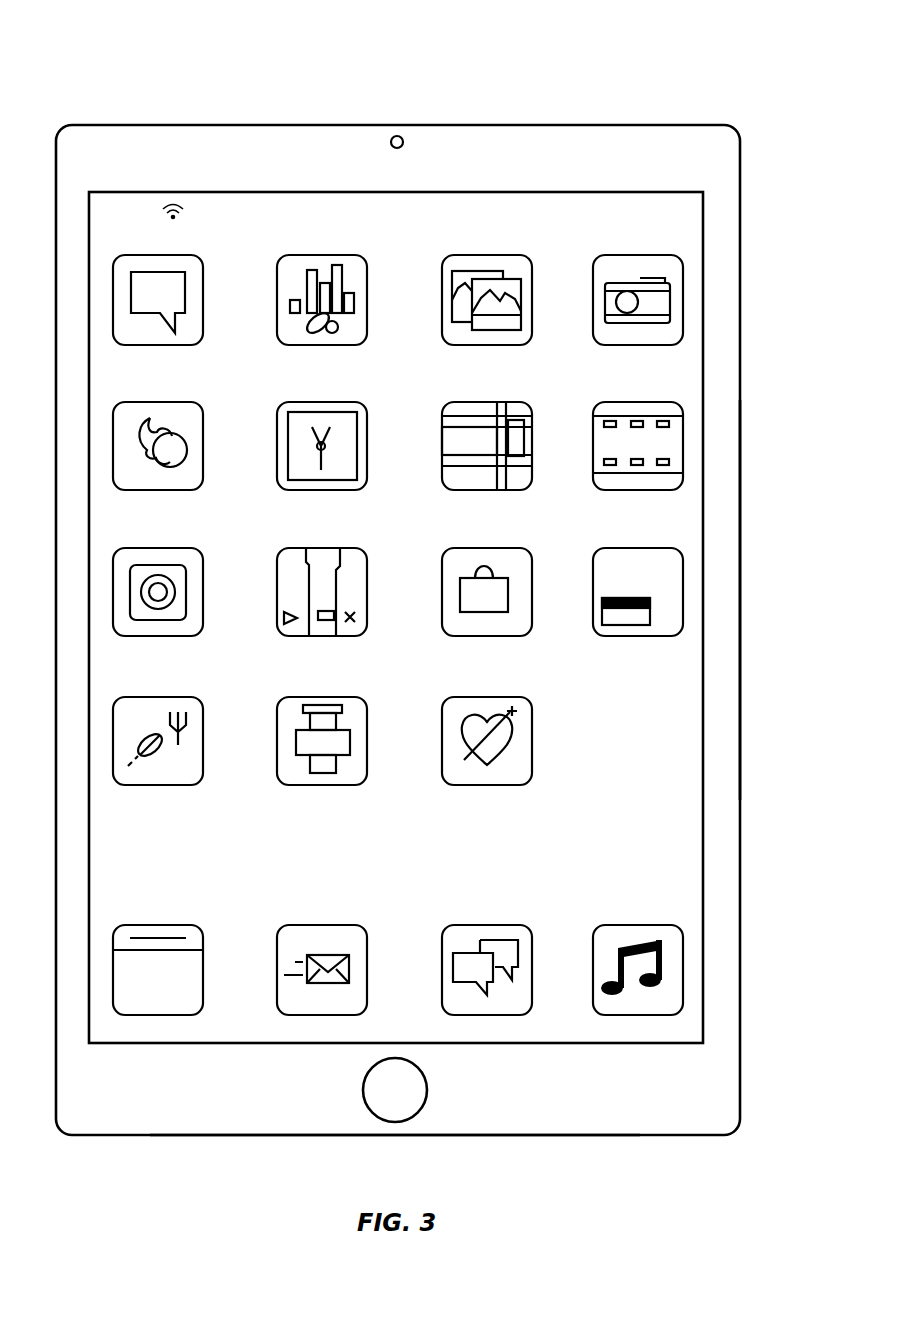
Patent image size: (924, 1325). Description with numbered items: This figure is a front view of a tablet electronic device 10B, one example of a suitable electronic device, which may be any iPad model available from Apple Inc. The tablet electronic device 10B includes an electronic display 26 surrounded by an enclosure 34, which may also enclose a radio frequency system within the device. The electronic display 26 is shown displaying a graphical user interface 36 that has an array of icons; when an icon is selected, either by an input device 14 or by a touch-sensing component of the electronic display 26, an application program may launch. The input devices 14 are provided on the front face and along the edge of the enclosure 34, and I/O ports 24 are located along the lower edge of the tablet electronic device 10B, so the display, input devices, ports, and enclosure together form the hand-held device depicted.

The tablet electronic device 10B is at (64, 70).
The input device 14 is at (660, 123).
The I/O port 24 is at (129, 1137).
The enclosure 34 is at (742, 599).
The electronic display 26 is at (704, 703).
The graphical user interface 36 is at (675, 797).